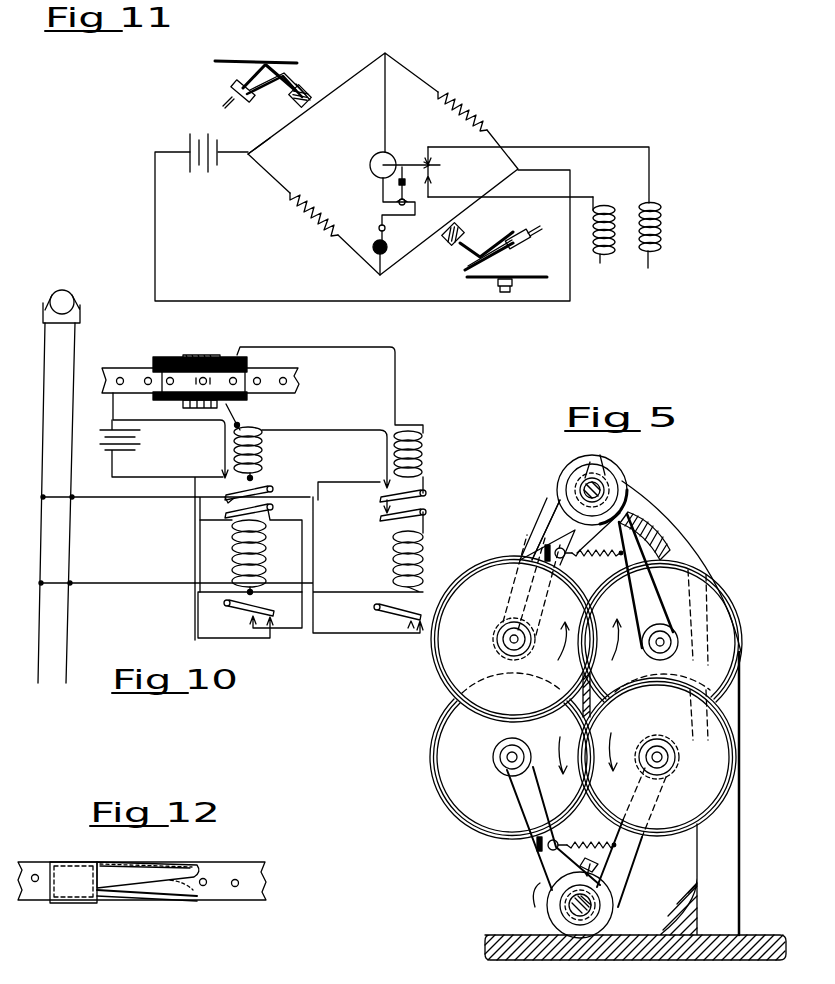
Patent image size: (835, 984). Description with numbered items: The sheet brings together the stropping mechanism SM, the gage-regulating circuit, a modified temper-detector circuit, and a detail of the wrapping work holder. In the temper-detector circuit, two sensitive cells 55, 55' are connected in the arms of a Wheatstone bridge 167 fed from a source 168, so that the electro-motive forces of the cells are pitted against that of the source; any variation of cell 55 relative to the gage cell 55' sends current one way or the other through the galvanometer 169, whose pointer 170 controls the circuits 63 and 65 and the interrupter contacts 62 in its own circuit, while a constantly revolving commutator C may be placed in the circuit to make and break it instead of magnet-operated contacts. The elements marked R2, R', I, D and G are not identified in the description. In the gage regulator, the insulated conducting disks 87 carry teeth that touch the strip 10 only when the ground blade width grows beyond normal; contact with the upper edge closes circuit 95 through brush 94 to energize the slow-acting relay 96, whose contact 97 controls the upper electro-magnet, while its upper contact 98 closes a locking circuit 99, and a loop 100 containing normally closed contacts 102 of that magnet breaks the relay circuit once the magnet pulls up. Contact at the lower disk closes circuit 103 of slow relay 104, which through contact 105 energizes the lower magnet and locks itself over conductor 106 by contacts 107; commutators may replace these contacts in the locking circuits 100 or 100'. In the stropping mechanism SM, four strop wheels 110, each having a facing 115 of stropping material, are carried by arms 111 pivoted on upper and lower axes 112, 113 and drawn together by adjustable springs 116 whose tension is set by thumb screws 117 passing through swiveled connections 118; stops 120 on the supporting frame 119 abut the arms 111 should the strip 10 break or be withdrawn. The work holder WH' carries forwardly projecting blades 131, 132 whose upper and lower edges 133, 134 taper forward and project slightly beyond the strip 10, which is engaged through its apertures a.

In FIG. 11, the strip 10 is at (245, 61).
In FIG. 5, the strip 10 is at (582, 655).
In FIG. 12, the strip 10 is at (228, 870).
In FIG. 11, the sensitive cell 55 is at (314, 86).
In FIG. 11, the gage cell 55' is at (492, 239).
In FIG. 11, the interrupter contacts 62 is at (392, 210).
In FIG. 11, the circuit 63 is at (582, 144).
In FIG. 11, the circuit 65 is at (545, 205).
In FIG. 11, the Wheatstone bridge 167 is at (278, 136).
In FIG. 11, the source 168 is at (201, 164).
In FIG. 11, the galvanometer 169 is at (397, 160).
In FIG. 11, the pointer 170 is at (416, 170).
In FIG. 11, the resistance R2 is at (463, 110).
In FIG. 11, the resistance R' is at (309, 217).
In FIG. 11, the commutator C is at (389, 252).
In FIG. 11, the coil I is at (596, 230).
In FIG. 11, the coil D is at (659, 236).
In FIG. 10, the generator terminal G is at (116, 474).
In FIG. 10, the insulated conducting disks 87 is at (240, 368).
In FIG. 10, the insulated brush 94 is at (222, 340).
In FIG. 10, the circuit 95 is at (332, 348).
In FIG. 10, the relay 96 is at (423, 452).
In FIG. 10, the contact 97 is at (425, 504).
In FIG. 10, the upper contact 98 is at (425, 486).
In FIG. 10, the locking circuit 99 is at (336, 432).
In FIG. 10, the loop 100 is at (309, 565).
In FIG. 10, the locking circuit 100' is at (226, 574).
In FIG. 10, the normally closed contacts 102 is at (420, 606).
In FIG. 10, the circuit 103 is at (240, 426).
In FIG. 10, the slow relay 104 is at (232, 440).
In FIG. 10, the contact 105 is at (225, 512).
In FIG. 10, the conductor 106 is at (234, 457).
In FIG. 10, the contacts 107 is at (272, 490).
In FIG. 5, the stropping mechanism SM is at (622, 490).
In FIG. 5, the strop wheels 110 is at (486, 720).
In FIG. 5, the arms 111 is at (648, 575).
In FIG. 5, the upper axis 112 is at (604, 490).
In FIG. 5, the lower axis 113 is at (568, 905).
In FIG. 5, the facing 115 is at (590, 680).
In FIG. 5, the adjustable springs 116 is at (527, 862).
In FIG. 5, the thumb screws 117 is at (545, 540).
In FIG. 5, the swiveled connections 118 is at (532, 530).
In FIG. 5, the supporting frame 119 is at (658, 912).
In FIG. 5, the stops 120 is at (637, 522).
In FIG. 12, the apertures a is at (266, 882).
In FIG. 12, the work holder WH' is at (63, 868).
In FIG. 12, the blade 131 is at (130, 850).
In FIG. 12, the blade 132 is at (130, 900).
In FIG. 12, the upper edge 133 is at (180, 864).
In FIG. 12, the lower edge 134 is at (180, 900).